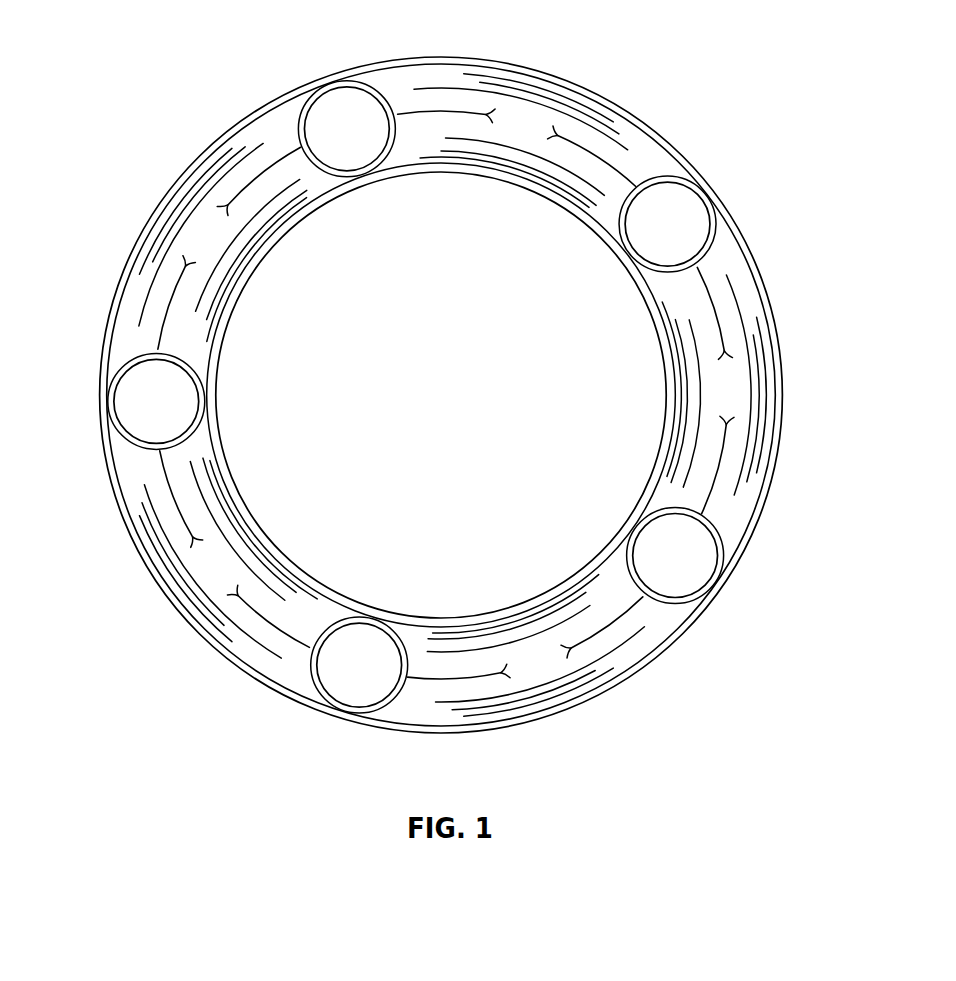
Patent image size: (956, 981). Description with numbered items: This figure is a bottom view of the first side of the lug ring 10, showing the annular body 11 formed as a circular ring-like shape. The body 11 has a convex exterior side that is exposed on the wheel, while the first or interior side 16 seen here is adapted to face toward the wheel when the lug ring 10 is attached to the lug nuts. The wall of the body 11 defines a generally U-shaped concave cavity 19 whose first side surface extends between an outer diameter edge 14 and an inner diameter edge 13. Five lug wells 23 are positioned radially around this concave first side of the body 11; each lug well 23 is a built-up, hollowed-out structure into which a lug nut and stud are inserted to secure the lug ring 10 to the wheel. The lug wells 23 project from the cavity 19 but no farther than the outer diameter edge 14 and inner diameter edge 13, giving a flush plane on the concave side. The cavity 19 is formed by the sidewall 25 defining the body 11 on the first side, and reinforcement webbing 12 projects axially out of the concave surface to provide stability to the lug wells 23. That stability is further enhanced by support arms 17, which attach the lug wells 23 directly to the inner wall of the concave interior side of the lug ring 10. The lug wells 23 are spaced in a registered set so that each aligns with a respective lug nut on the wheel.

The lug ring 10 is at (128, 97).
The annular body 11 is at (705, 182).
The reinforcement webbing 12 is at (280, 636).
The inner diameter edge 13 is at (258, 530).
The outer diameter edge 14 is at (120, 514).
The first or interior side 16 is at (196, 569).
The support arms 17 is at (368, 614).
The cavity 19 is at (525, 128).
The lug wells 23 is at (358, 127).
The sidewall 25 is at (375, 90).